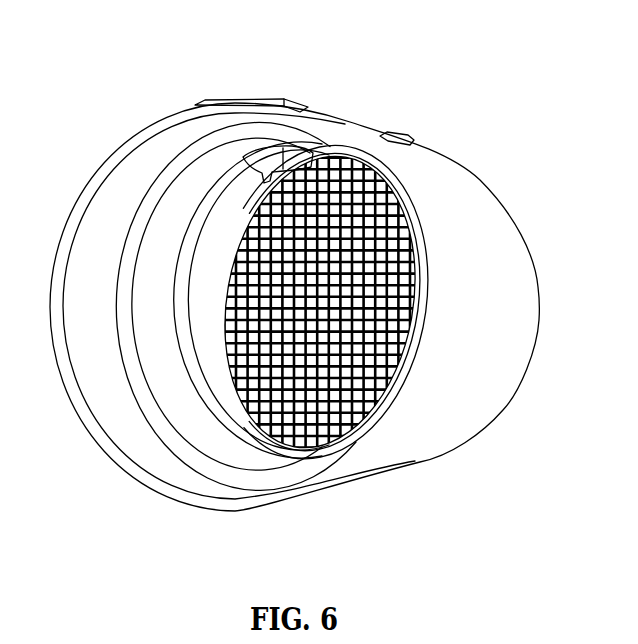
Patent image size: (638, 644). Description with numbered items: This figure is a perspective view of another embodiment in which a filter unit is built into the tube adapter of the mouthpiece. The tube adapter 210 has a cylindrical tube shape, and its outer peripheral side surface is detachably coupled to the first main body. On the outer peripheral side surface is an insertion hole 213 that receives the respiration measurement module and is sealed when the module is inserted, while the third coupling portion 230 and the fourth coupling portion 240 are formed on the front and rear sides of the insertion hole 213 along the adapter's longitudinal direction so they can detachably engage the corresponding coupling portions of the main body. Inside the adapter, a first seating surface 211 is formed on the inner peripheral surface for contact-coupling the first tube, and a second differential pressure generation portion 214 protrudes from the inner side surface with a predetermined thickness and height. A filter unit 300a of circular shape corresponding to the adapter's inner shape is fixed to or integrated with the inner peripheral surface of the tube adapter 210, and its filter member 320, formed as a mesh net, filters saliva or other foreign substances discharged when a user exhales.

The tube adapter 210 is at (465, 178).
The first seating surface 211 is at (132, 437).
The insertion hole 213 is at (302, 157).
The second differential pressure generation portion 214 is at (215, 205).
The third coupling portion 230 is at (283, 103).
The fourth coupling portion 240 is at (397, 133).
The filter unit 300a is at (302, 439).
The filter member 320 is at (338, 432).